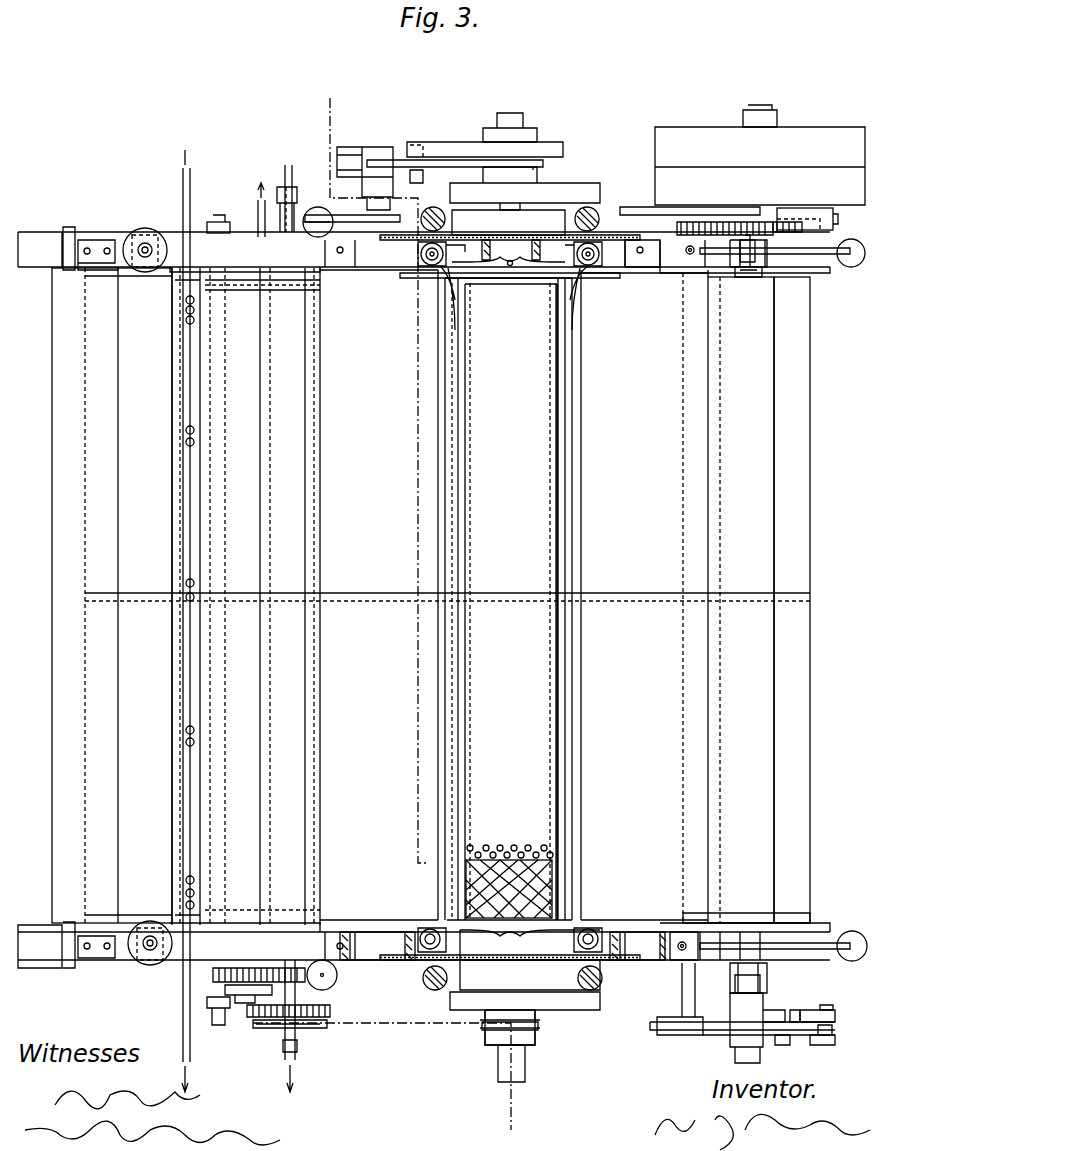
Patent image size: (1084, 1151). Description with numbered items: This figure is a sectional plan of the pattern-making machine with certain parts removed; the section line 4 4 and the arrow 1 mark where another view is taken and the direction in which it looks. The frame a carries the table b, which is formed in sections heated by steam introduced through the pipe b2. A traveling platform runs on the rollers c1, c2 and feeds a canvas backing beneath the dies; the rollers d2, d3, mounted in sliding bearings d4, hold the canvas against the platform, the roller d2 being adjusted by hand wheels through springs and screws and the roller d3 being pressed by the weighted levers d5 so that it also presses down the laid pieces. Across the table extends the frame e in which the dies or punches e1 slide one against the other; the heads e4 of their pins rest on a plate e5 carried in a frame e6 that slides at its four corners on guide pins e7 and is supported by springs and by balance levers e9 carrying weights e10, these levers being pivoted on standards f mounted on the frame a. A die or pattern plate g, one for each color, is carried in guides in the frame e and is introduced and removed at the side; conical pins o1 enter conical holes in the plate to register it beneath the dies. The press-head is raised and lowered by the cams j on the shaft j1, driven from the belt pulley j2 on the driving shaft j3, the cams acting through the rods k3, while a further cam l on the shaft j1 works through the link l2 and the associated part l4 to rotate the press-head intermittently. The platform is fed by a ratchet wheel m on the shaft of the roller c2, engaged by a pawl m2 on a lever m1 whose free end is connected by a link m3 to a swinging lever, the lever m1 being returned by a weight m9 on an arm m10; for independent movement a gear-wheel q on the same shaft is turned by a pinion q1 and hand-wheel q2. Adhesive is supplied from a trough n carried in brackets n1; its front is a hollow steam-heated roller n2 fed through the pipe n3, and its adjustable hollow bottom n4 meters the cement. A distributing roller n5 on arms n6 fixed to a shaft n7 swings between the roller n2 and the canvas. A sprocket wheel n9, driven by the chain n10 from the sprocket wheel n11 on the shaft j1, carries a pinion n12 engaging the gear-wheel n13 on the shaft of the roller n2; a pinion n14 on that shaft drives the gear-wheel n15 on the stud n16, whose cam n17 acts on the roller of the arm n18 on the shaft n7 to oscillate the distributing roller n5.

The frame a is at (340, 268).
The table b is at (514, 595).
The steam pipe b2 is at (258, 222).
The carrying roller c1 is at (112, 595).
The carrying roller c2 is at (810, 658).
The roller d2 is at (125, 571).
The roller d3 is at (746, 598).
The sliding bearings d4 is at (148, 228).
The weighted levers d5 is at (835, 258).
The frame e is at (568, 945).
The dies or punches e1 is at (468, 888).
The pin head e4 is at (530, 852).
The plate e5 is at (500, 835).
The sliding frame e6 is at (458, 322).
The guide pins e7 is at (433, 266).
The balance levers e9 is at (352, 200).
The weights e10 is at (317, 210).
The standards f is at (519, 600).
The die or pattern plate g is at (526, 599).
The cams j is at (572, 195).
The cam shaft j1 is at (508, 113).
The belt pulley j2 is at (760, 166).
The driving shaft j3 is at (763, 105).
The rods k3 is at (425, 212).
The cam l is at (553, 157).
The link l2 is at (445, 160).
The bracket l4 is at (352, 158).
The ratchet wheel m is at (770, 1018).
The lever m1 is at (805, 1030).
The pawl m2 is at (795, 1010).
The link m3 is at (822, 1005).
The weight m9 is at (672, 1028).
The arm m10 is at (718, 1030).
The trough n is at (246, 596).
The brackets n1 is at (205, 240).
The roller n2 is at (284, 555).
The steam pipe n3 is at (297, 176).
The trough bottom n4 is at (243, 650).
The distributing roller n5 is at (300, 745).
The arms n6 is at (256, 292).
The shaft n7 is at (220, 222).
The sprocket wheel n9 is at (310, 1030).
The sprocket chain n10 is at (400, 1026).
The sprocket wheel n11 is at (488, 1030).
The pinion n12 is at (330, 992).
The gear-wheel n13 is at (330, 1012).
The pinion n14 is at (330, 975).
The gear-wheel n15 is at (213, 972).
The stud n16 is at (243, 1005).
The cam n17 is at (225, 990).
The arm n18 is at (207, 1003).
The conical pins o1 is at (510, 266).
The gear-wheel q is at (820, 240).
The pinion q1 is at (685, 222).
The hand-wheel q2 is at (703, 222).
The arrow 1 is at (408, 1101).
The section line 4 is at (385, 611).